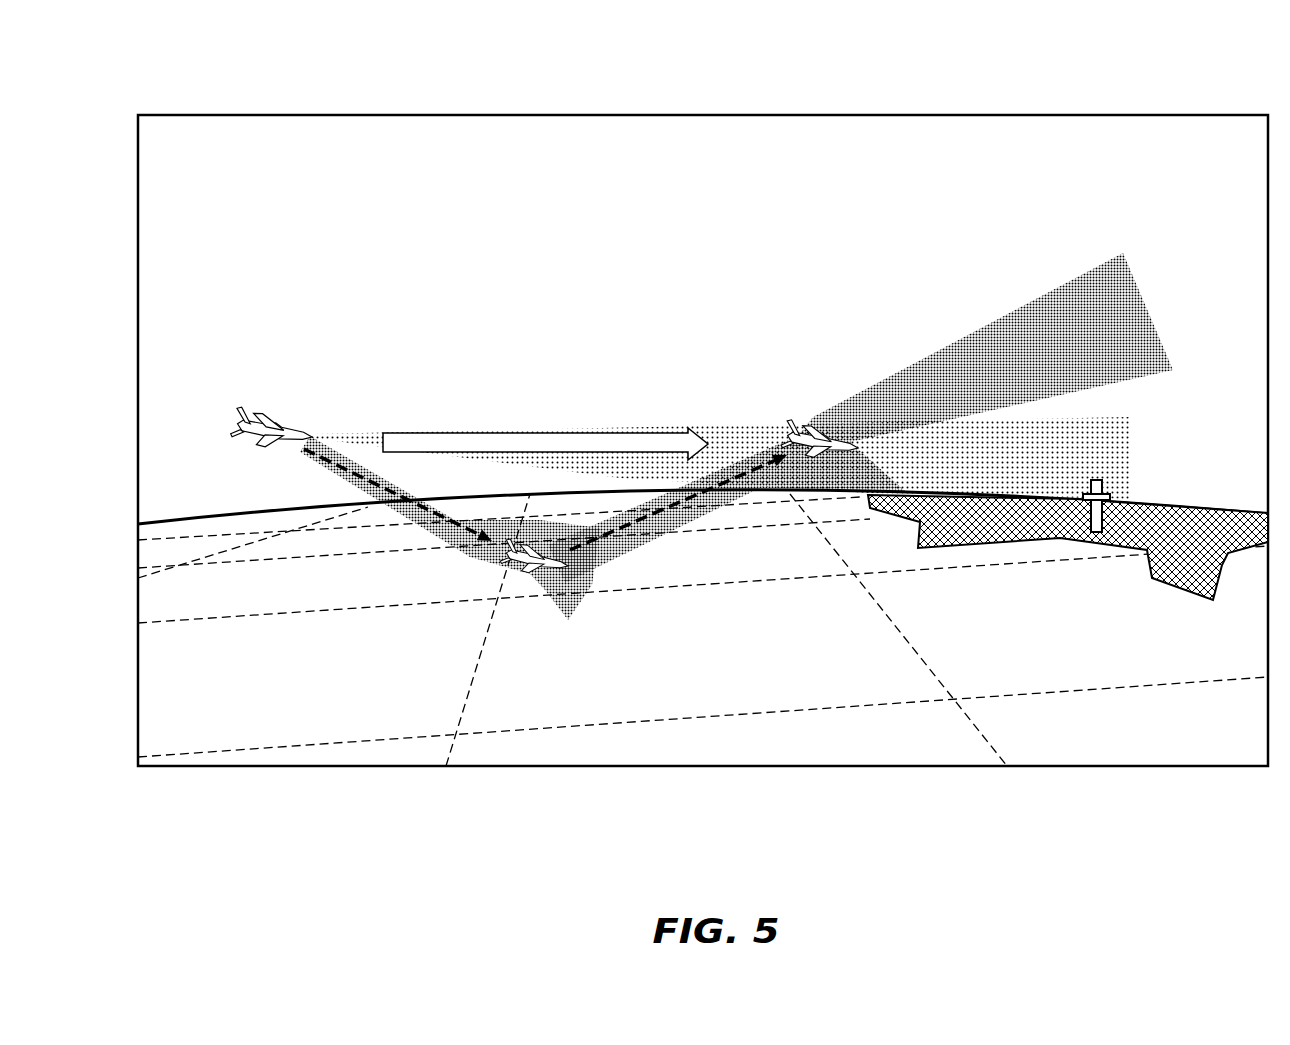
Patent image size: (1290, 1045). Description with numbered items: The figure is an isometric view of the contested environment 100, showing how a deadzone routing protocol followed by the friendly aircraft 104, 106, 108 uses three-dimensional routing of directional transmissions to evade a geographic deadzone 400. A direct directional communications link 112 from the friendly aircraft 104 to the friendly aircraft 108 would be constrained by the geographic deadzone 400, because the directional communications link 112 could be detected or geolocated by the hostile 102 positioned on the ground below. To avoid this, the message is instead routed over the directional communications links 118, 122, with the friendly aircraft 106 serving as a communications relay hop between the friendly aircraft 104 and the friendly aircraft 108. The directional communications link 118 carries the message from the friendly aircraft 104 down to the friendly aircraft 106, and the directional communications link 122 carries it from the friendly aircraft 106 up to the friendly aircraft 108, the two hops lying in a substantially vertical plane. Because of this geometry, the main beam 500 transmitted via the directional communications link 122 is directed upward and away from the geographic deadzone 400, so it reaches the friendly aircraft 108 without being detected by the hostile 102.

The contested environment 100 is at (183, 80).
The hostile 102 is at (1117, 503).
The friendly aircraft 104 is at (258, 418).
The friendly aircraft 106 is at (507, 563).
The friendly aircraft 108 is at (798, 440).
The directional communications link 112 is at (530, 435).
The directional communications link 118 is at (370, 492).
The directional communications link 122 is at (695, 497).
The geographic deadzone 400 is at (1072, 441).
The main beam 500 is at (995, 364).